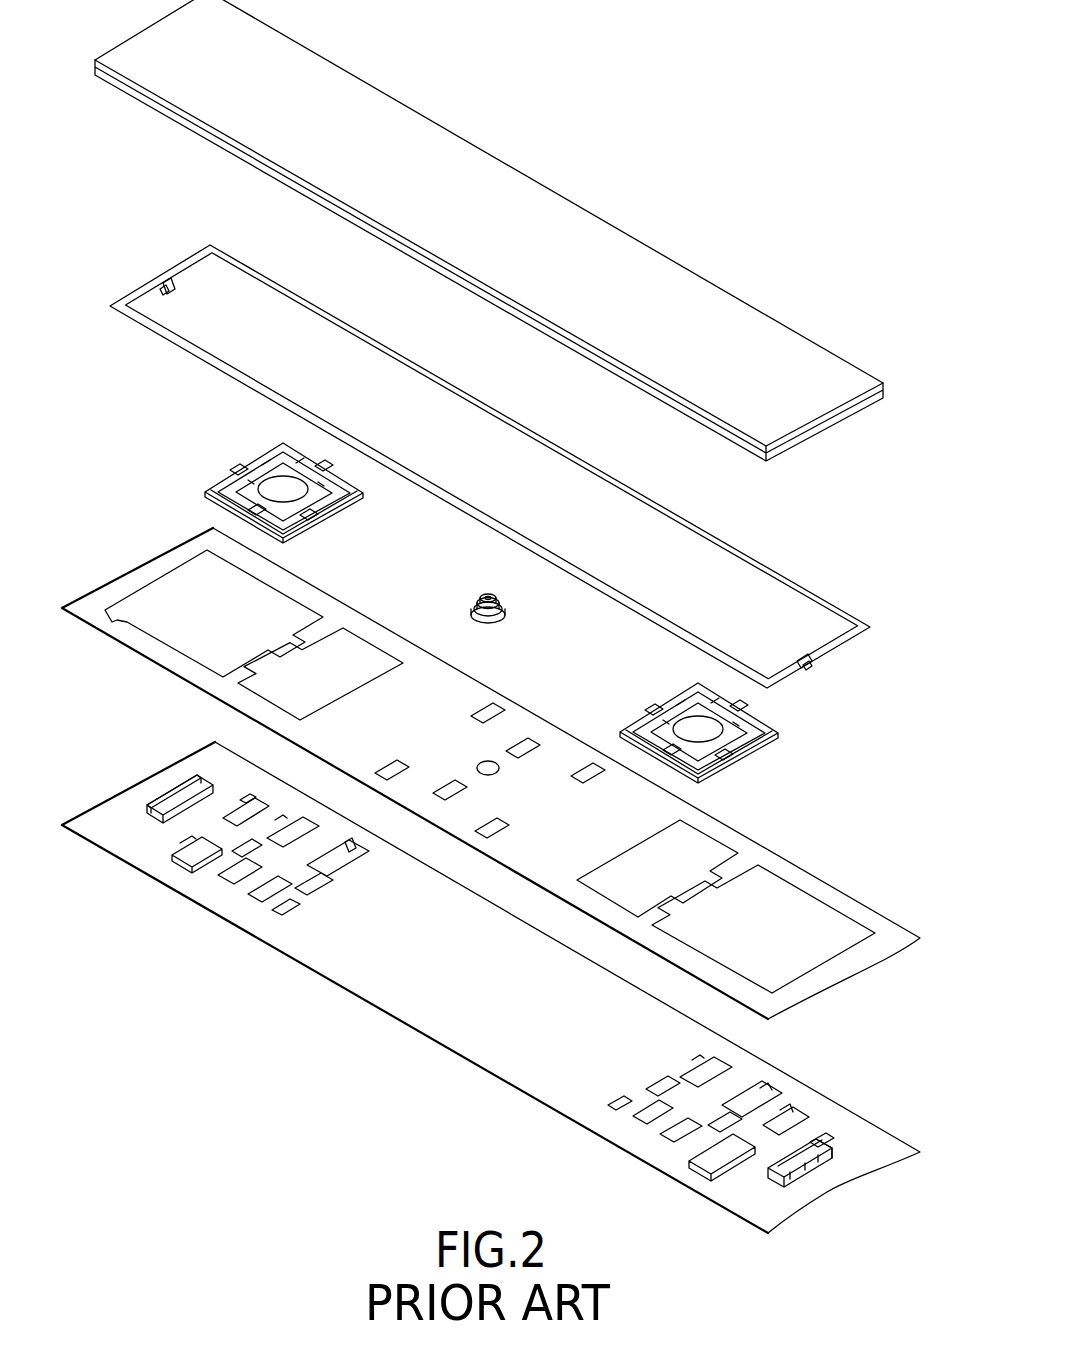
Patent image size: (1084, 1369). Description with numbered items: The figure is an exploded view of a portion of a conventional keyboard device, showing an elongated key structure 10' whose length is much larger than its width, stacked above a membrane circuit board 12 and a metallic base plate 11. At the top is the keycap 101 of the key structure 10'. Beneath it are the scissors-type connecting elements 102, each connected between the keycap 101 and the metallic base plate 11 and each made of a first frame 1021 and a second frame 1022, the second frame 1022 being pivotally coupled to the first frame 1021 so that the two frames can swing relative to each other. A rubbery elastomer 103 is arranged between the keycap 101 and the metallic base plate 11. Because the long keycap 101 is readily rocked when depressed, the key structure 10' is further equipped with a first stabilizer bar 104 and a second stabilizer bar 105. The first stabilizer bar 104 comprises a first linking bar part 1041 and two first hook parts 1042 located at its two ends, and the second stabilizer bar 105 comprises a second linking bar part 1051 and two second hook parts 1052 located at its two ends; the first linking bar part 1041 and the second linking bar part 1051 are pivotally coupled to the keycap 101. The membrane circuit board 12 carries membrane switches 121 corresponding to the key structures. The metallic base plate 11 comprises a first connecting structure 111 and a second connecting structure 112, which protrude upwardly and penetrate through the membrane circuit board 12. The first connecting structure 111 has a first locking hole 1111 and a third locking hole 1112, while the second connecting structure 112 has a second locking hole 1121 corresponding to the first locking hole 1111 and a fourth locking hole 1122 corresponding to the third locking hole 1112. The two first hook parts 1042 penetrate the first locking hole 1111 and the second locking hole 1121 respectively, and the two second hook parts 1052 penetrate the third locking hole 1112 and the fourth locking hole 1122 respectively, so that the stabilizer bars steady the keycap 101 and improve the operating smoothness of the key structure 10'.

The key structure 10' is at (489, 230).
The keycap 101 is at (580, 232).
The scissors-type connecting element 102 is at (479, 600).
The first frame 1021 is at (340, 512).
The second frame 1022 is at (665, 712).
The rubbery elastomer 103 is at (508, 604).
The first stabilizer bar 104 is at (462, 480).
The first linking bar part 1041 is at (472, 537).
The first hook parts 1042 is at (165, 291).
The second stabilizer bar 105 is at (490, 466).
The second linking bar part 1051 is at (540, 422).
The second hook parts 1052 is at (193, 288).
The metallic base plate 11 is at (491, 987).
The first connecting structure 111 is at (755, 1159).
The first locking hole 1111 is at (815, 1170).
The third locking hole 1112 is at (835, 1160).
The second connecting structure 112 is at (218, 813).
The second locking hole 1121 is at (160, 793).
The fourth locking hole 1122 is at (165, 783).
The membrane circuit board 12 is at (491, 773).
The membrane switch 121 is at (483, 760).